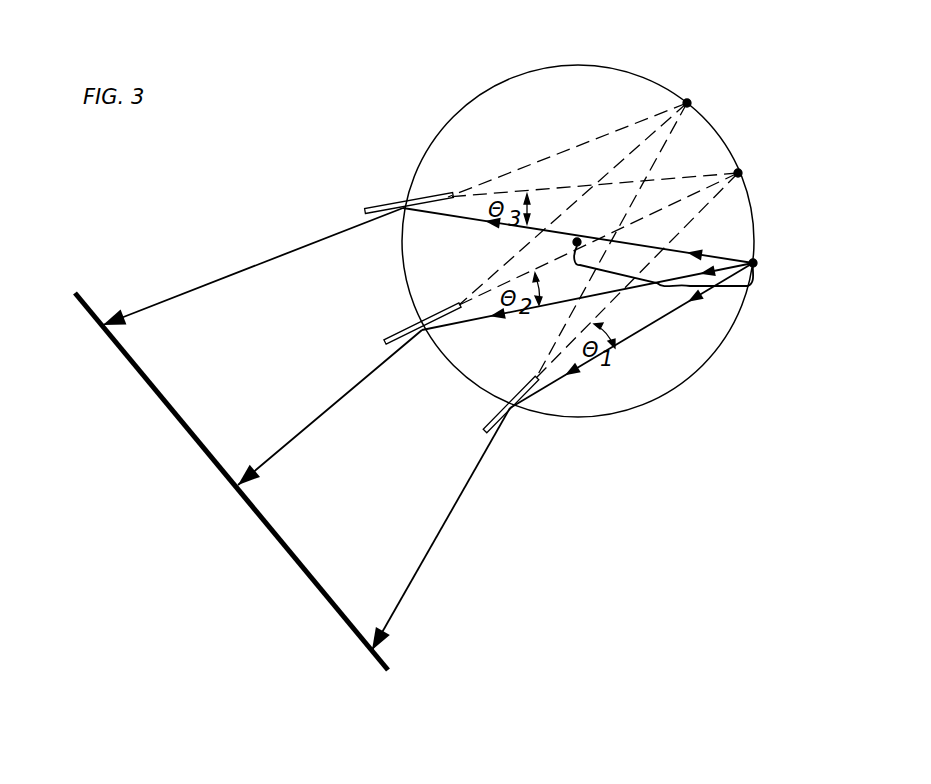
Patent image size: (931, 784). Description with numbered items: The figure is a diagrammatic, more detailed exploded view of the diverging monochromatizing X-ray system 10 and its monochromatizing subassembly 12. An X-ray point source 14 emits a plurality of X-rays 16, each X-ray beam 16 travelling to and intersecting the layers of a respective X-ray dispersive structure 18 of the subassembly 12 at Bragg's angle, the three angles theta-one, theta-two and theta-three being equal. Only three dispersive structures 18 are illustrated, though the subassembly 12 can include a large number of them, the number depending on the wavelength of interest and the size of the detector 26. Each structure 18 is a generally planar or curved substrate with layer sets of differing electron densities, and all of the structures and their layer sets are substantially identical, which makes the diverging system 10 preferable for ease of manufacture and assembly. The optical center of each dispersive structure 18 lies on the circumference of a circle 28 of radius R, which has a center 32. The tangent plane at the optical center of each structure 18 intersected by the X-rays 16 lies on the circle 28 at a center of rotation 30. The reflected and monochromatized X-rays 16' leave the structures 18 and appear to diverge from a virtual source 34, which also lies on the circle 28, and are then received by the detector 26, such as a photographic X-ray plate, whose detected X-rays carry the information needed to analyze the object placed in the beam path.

The system for monochromatizing X-rays 10 is at (415, 104).
The monochromatizing subassembly 12 is at (663, 278).
The point source 14 is at (756, 263).
The X-rays 16 is at (578, 308).
The reflected and monochromatized X-rays 16' is at (311, 429).
The X-ray dispersive structures 18 is at (382, 204).
The detector 26 is at (283, 546).
The circle 28 is at (578, 64).
The center of rotation 30 is at (741, 172).
The center 32 is at (575, 245).
The virtual source 34 is at (690, 104).